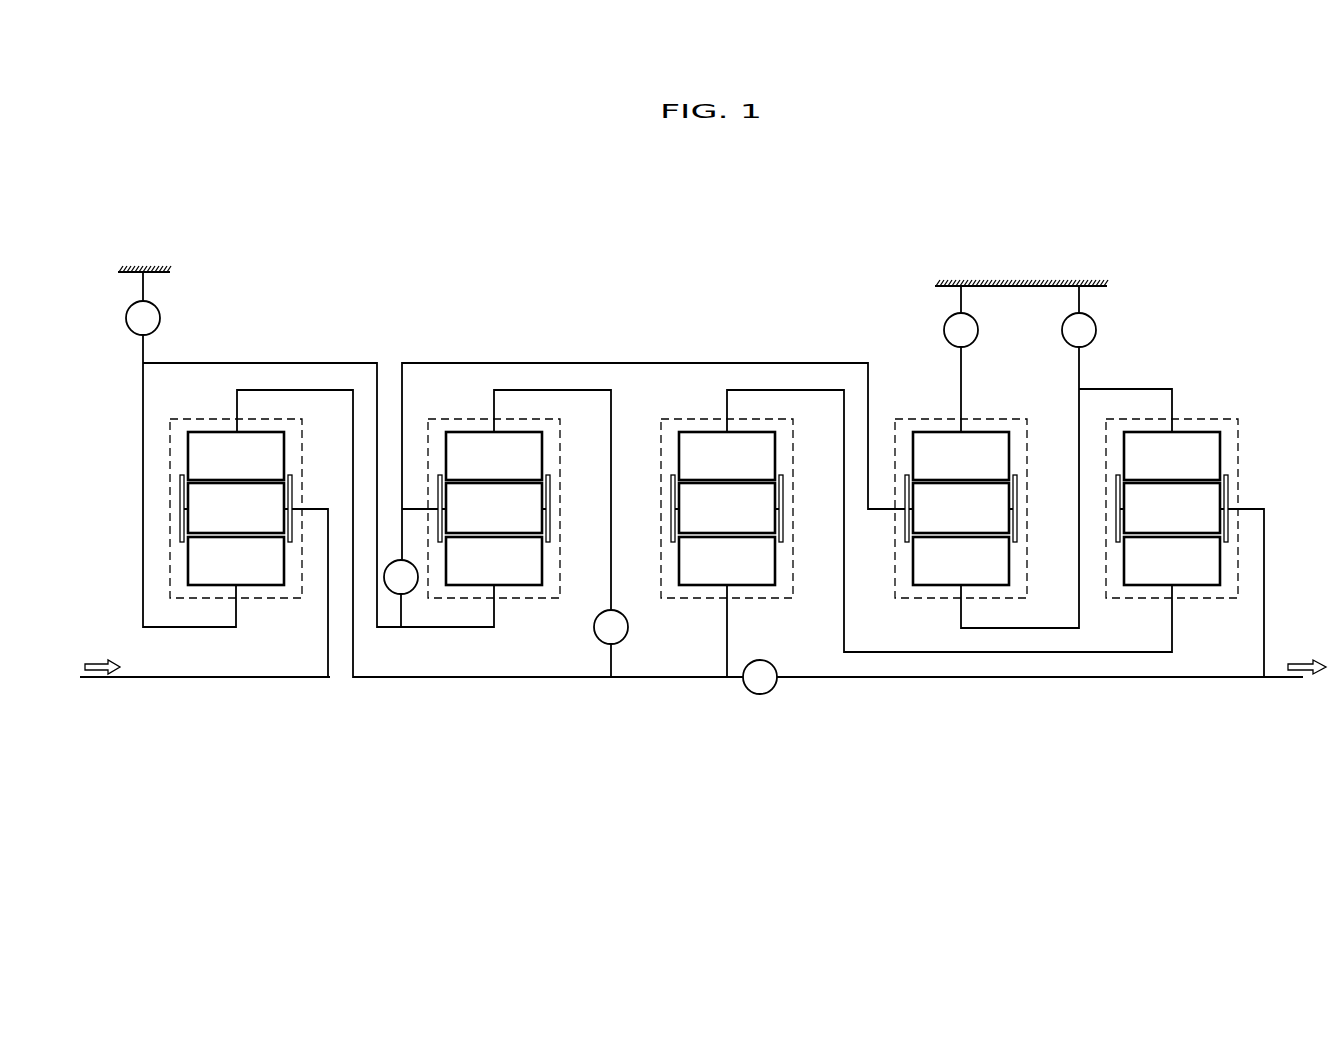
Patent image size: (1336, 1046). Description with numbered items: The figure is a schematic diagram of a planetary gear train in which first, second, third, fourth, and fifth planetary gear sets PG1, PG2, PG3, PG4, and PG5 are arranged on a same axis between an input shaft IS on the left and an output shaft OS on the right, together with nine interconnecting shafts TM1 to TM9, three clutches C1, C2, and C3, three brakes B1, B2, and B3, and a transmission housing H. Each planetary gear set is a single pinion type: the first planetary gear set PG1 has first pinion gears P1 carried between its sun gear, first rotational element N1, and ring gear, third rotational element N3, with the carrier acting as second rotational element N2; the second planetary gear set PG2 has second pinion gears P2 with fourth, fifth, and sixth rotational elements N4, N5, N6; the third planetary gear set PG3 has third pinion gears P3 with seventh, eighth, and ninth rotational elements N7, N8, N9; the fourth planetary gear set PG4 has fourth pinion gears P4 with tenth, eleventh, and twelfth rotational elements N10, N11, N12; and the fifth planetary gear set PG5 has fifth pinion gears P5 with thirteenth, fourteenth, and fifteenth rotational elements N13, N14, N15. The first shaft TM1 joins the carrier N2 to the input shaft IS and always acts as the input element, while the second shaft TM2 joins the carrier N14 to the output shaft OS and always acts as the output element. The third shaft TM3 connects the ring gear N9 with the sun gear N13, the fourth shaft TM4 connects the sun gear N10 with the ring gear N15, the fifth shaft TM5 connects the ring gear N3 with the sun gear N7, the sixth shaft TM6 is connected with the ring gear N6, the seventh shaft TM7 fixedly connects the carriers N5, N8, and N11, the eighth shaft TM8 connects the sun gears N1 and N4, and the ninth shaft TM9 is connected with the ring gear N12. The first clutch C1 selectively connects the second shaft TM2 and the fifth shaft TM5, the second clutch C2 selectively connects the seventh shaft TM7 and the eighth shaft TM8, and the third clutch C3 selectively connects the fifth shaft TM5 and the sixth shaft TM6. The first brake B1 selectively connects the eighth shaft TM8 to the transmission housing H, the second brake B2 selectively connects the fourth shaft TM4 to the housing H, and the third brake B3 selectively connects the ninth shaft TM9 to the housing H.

The first planetary gear set PG1 is at (253, 614).
The second planetary gear set PG2 is at (523, 614).
The third planetary gear set PG3 is at (695, 614).
The fourth planetary gear set PG4 is at (935, 616).
The fifth planetary gear set PG5 is at (1195, 616).
The first rotational element N1 is at (236, 561).
The second rotational element N2 is at (293, 491).
The third rotational element N3 is at (236, 456).
The fourth rotational element N4 is at (494, 561).
The fifth rotational element N5 is at (551, 534).
The sixth rotational element N6 is at (494, 456).
The seventh rotational element N7 is at (727, 561).
The eighth rotational element N8 is at (784, 534).
The ninth rotational element N9 is at (727, 456).
The tenth rotational element N10 is at (961, 561).
The eleventh rotational element N11 is at (1018, 534).
The twelfth rotational element N12 is at (961, 456).
The thirteenth rotational element N13 is at (1172, 561).
The fourteenth rotational element N14 is at (1229, 487).
The fifteenth rotational element N15 is at (1172, 456).
The first pinion gears P1 is at (236, 508).
The second pinion gears P2 is at (494, 508).
The third pinion gears P3 is at (727, 508).
The fourth pinion gears P4 is at (961, 508).
The fifth pinion gears P5 is at (1172, 508).
The first shaft TM1 is at (328, 650).
The second shaft TM2 is at (1266, 570).
The third shaft TM3 is at (1025, 653).
The fourth shaft TM4 is at (1128, 389).
The fifth shaft TM5 is at (445, 680).
The sixth shaft TM6 is at (571, 390).
The seventh shaft TM7 is at (458, 363).
The eighth shaft TM8 is at (303, 363).
The ninth shaft TM9 is at (960, 377).
The first brake B1 is at (143, 317).
The second brake B2 is at (1079, 316).
The third brake B3 is at (961, 316).
The first clutch C1 is at (760, 677).
The second clutch C2 is at (401, 577).
The third clutch C3 is at (611, 627).
The input shaft IS is at (128, 679).
The output shaft OS is at (1280, 679).
The transmission housing H is at (145, 272).